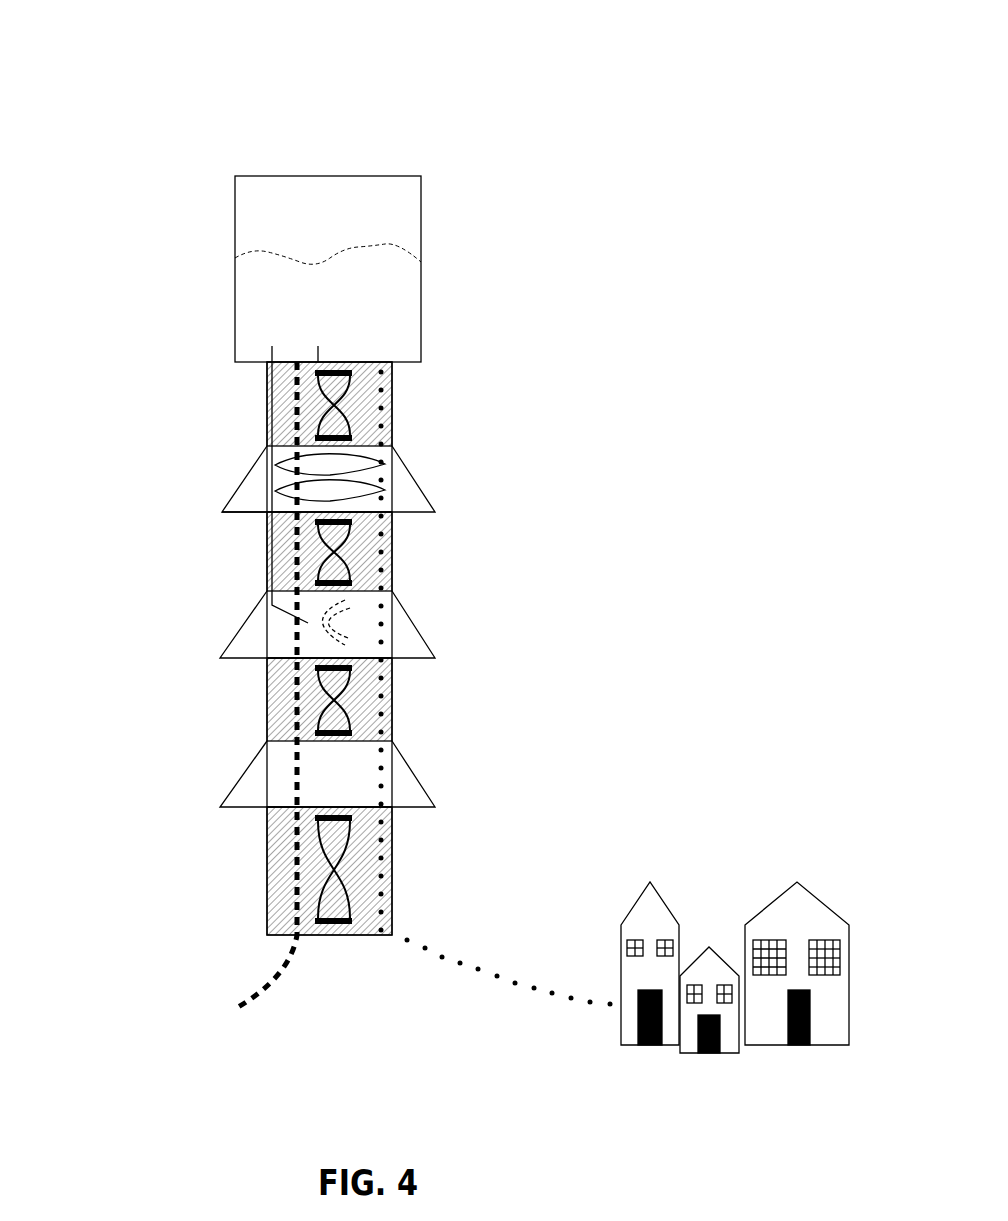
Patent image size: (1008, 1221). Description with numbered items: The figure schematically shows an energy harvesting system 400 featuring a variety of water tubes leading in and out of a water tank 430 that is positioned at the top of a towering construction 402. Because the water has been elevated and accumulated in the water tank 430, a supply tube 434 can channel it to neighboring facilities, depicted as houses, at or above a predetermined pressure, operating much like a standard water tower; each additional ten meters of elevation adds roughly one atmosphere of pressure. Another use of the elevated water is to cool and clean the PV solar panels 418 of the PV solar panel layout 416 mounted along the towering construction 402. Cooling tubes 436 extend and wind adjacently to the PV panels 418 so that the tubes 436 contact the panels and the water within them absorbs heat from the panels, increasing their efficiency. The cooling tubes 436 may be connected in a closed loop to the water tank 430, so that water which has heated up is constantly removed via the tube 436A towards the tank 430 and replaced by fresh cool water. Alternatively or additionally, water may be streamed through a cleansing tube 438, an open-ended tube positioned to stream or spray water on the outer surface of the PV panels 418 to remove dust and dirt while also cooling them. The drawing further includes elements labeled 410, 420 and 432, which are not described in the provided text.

The energy harvesting system 400 is at (528, 38).
The towering construction 402 is at (195, 298).
The column/tower assembly 410 is at (437, 460).
The PV solar panel layout 416 is at (232, 486).
The PV solar panels 418 is at (243, 510).
The helical element 420 is at (357, 866).
The water tank 430 is at (410, 172).
The outlet line 432 is at (245, 992).
The supply tube 434 is at (508, 947).
The cooling tubes 436 is at (393, 410).
The tube 436A is at (267, 398).
The cleansing tube 438 is at (268, 560).